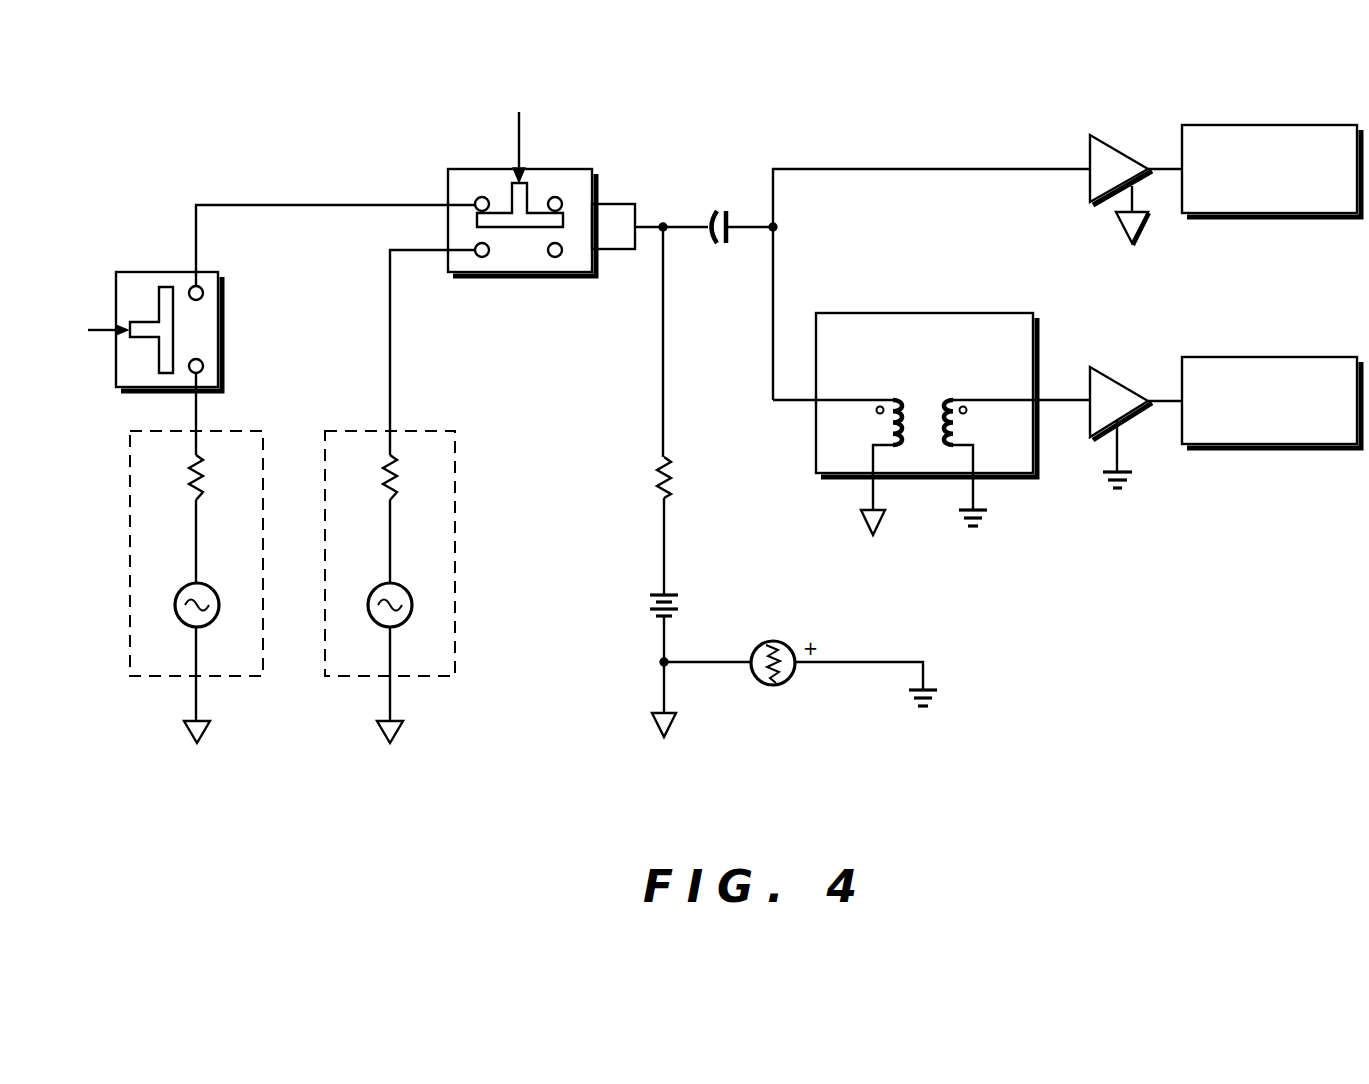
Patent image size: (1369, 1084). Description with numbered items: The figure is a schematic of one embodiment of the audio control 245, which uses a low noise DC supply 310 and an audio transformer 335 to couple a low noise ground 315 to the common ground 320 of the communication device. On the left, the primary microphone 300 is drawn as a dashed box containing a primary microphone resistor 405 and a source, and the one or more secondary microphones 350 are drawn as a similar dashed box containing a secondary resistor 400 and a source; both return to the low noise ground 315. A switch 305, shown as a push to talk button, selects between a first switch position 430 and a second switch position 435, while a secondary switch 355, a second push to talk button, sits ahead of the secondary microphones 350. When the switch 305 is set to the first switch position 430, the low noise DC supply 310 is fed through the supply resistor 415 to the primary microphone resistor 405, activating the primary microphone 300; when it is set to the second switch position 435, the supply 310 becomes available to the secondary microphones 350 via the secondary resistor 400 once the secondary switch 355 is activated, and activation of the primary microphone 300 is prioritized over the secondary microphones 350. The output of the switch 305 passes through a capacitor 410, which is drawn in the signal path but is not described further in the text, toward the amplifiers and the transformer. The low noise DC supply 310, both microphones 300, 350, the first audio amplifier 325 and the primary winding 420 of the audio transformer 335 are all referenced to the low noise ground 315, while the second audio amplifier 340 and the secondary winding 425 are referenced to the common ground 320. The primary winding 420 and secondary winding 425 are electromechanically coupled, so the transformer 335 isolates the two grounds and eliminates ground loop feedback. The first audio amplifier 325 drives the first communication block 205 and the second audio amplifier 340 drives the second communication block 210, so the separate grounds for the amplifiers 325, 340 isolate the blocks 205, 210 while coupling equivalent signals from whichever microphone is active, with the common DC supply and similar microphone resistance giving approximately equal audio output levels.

The first communication block 205 is at (1226, 125).
The second communication block 210 is at (1210, 357).
The audio control 245 is at (378, 818).
The primary microphone 300 is at (325, 431).
The switch 305 is at (448, 169).
The low noise DC supply 310 is at (650, 605).
The low noise ground 315 is at (1117, 225).
The common ground 320 is at (1133, 480).
The first audio amplifier 325 is at (1115, 148).
The audio transformer 335 is at (816, 313).
The second audio amplifier 340 is at (1113, 378).
The secondary microphone 350 is at (130, 431).
The secondary switch 355 is at (116, 272).
The secondary resistor 400 is at (185, 475).
The primary microphone resistor 405 is at (385, 475).
The capacitor 410 is at (713, 210).
The supply resistor 415 is at (673, 465).
The primary winding 420 is at (883, 428).
The secondary winding 425 is at (963, 428).
The first switch position 430 is at (562, 258).
The second switch position 435 is at (556, 197).